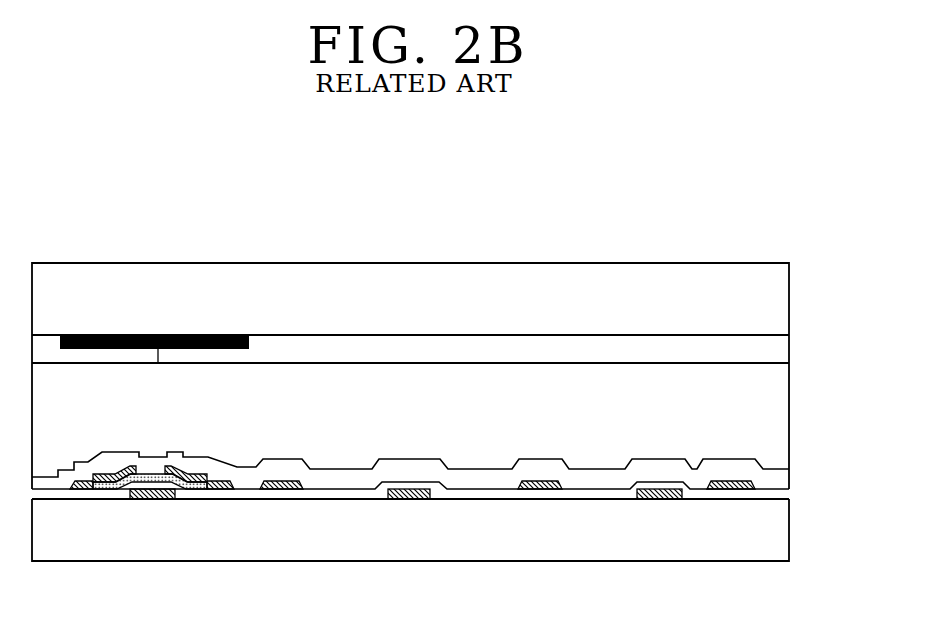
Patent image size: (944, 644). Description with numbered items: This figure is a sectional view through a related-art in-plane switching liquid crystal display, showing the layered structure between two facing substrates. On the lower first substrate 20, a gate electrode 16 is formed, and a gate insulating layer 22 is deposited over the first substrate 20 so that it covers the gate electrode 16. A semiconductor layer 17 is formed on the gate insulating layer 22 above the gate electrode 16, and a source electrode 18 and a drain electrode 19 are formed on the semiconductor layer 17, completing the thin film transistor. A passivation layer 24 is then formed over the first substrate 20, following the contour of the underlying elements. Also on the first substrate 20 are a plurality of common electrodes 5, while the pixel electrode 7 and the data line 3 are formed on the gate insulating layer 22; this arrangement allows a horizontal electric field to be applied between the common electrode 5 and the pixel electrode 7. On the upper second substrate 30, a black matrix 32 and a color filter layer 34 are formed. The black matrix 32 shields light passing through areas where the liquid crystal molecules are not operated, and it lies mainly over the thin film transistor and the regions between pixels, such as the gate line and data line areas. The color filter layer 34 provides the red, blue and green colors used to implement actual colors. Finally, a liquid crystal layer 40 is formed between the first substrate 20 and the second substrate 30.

The data line 3 is at (740, 489).
The common electrode 5 is at (410, 499).
The pixel electrode 7 is at (540, 489).
The gate electrode 16 is at (145, 499).
The semiconductor layer 17 is at (190, 489).
The source electrode 18 is at (75, 489).
The drain electrode 19 is at (218, 489).
The first substrate 20 is at (775, 540).
The gate insulating layer 22 is at (780, 495).
The passivation layer 24 is at (780, 480).
The second substrate 30 is at (780, 327).
The black matrix 32 is at (203, 336).
The color filter layer 34 is at (372, 345).
The liquid crystal layer 40 is at (780, 405).